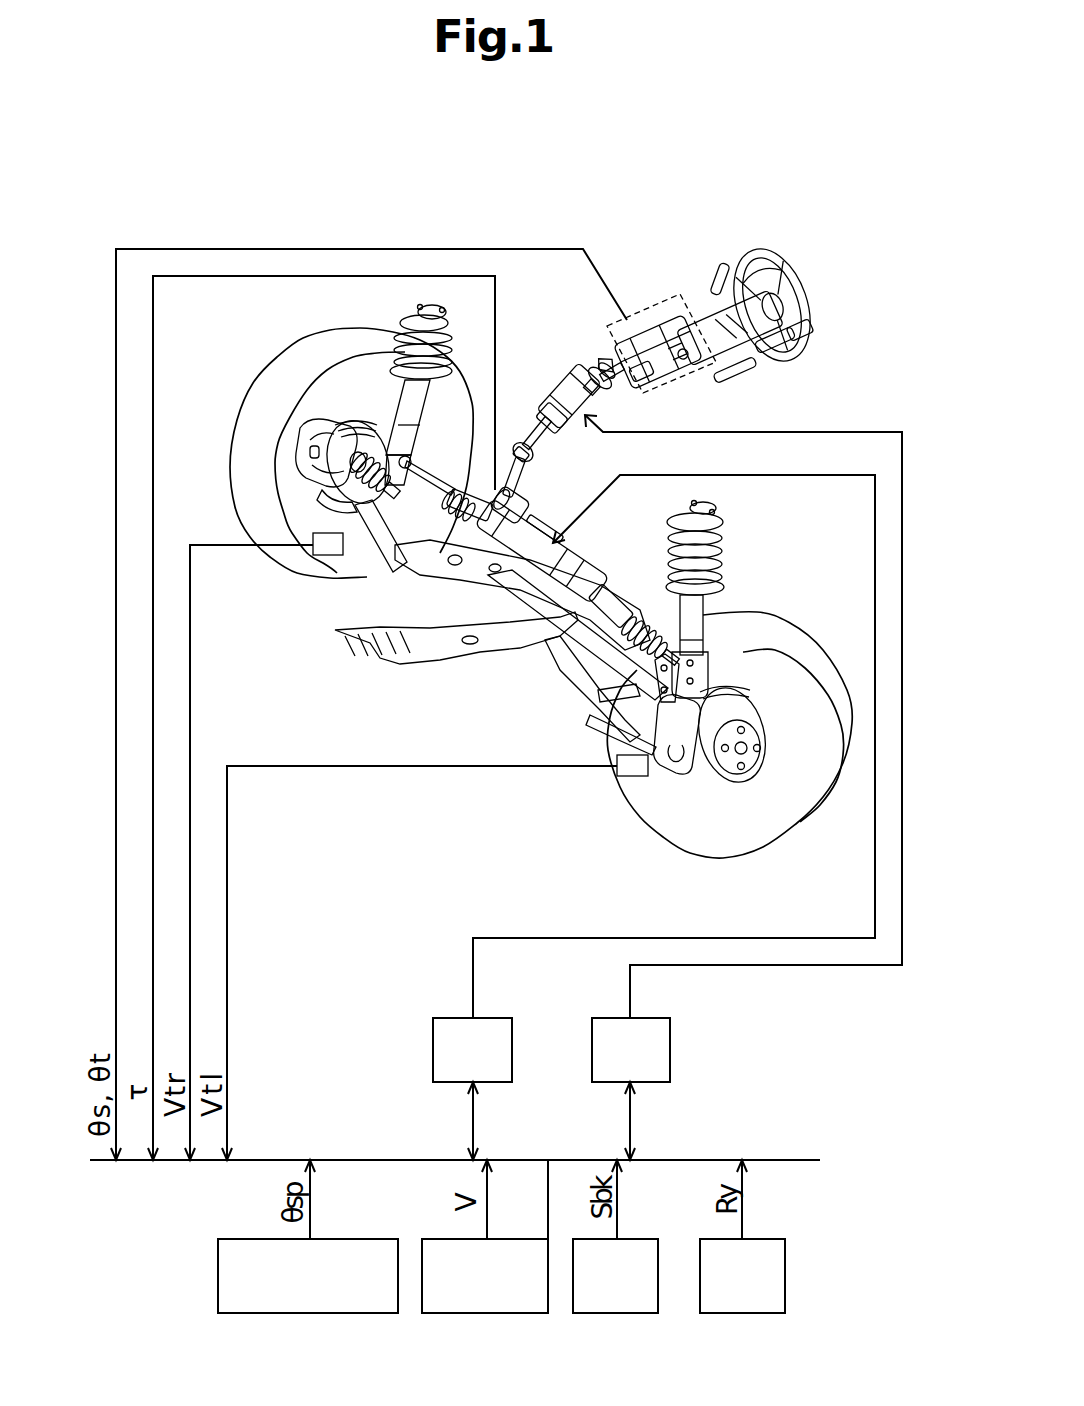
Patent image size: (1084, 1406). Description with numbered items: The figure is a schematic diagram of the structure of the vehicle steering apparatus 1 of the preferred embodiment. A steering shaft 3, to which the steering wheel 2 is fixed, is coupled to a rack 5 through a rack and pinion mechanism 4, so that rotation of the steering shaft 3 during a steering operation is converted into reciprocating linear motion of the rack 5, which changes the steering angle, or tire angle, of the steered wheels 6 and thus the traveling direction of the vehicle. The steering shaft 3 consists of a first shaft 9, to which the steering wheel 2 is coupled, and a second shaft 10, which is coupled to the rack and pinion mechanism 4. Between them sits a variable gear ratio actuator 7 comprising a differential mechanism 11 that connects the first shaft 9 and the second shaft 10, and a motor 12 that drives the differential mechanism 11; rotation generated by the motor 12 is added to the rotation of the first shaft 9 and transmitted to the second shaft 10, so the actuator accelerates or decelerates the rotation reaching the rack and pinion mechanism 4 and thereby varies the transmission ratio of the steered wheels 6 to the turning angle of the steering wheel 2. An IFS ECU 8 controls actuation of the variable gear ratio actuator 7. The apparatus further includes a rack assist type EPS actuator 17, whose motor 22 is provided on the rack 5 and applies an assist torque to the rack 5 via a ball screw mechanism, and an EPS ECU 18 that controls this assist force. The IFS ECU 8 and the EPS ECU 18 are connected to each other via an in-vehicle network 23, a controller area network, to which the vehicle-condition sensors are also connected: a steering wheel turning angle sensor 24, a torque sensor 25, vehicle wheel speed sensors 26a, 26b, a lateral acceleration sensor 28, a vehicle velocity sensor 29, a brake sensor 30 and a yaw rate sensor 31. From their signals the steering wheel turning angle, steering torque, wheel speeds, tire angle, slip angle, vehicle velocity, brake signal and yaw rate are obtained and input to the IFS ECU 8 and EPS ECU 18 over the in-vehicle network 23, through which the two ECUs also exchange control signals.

The steering apparatus 1 is at (822, 212).
The steering wheel 2 is at (808, 300).
The steering shaft 3 is at (570, 480).
The rack and pinion mechanism 4 is at (513, 523).
The rack 5 is at (561, 579).
The steered wheels 6 is at (287, 359).
The variable gear ratio actuator 7 is at (554, 358).
The IFS ECU 8 is at (670, 1047).
The first shaft 9 is at (608, 386).
The second shaft 10 is at (537, 453).
The differential mechanism 11 is at (547, 399).
The motor 12 is at (552, 389).
The EPS actuator 17 is at (577, 548).
The EPS ECU 18 is at (512, 1047).
The motor 22 is at (477, 597).
The in-vehicle network 23 is at (808, 1160).
The steering wheel turning angle sensor 24 is at (662, 393).
The torque sensor 25 is at (483, 480).
The vehicle wheel speed sensor 26a is at (330, 555).
The vehicle wheel speed sensor 26b is at (633, 778).
The lateral acceleration sensor 28 is at (252, 1238).
The vehicle velocity sensor 29 is at (440, 1238).
The brake sensor 30 is at (643, 1239).
The yaw rate sensor 31 is at (772, 1239).